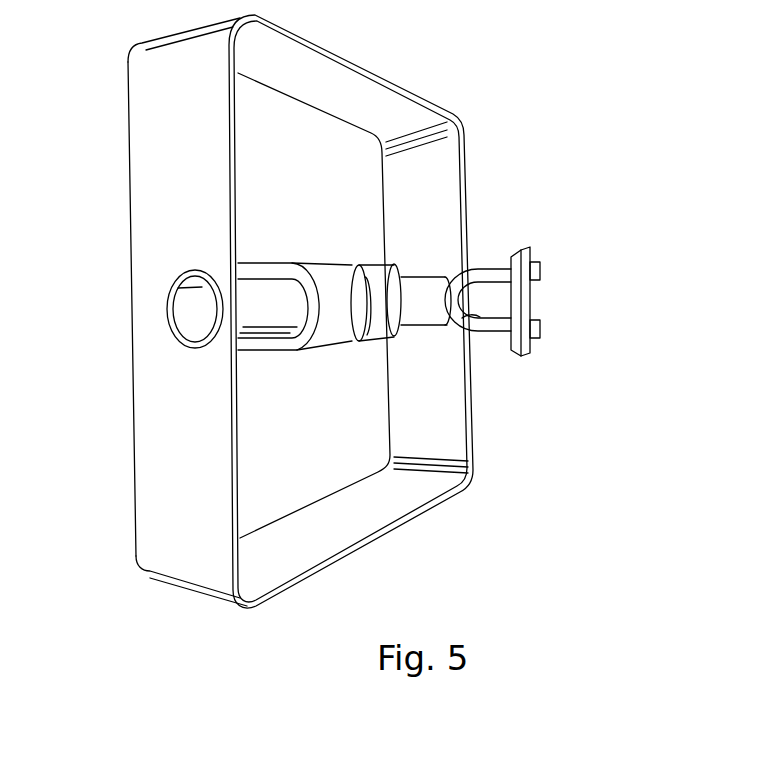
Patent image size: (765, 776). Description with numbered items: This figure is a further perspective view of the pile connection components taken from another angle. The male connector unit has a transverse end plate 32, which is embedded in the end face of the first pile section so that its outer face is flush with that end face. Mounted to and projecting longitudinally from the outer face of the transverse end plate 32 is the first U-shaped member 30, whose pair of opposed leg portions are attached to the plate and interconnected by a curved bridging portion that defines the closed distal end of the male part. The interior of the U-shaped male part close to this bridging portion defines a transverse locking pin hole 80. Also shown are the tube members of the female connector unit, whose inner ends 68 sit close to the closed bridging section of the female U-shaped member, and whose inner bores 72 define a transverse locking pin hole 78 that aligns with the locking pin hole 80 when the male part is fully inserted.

The first U-shaped member 30 is at (488, 272).
The transverse end plate 32 is at (527, 296).
The inner ends of the tube members 68 is at (372, 315).
The inner bores of the tube members 72 is at (183, 312).
The transverse locking pin hole 78 is at (365, 282).
The transverse locking pin hole 80 is at (468, 318).